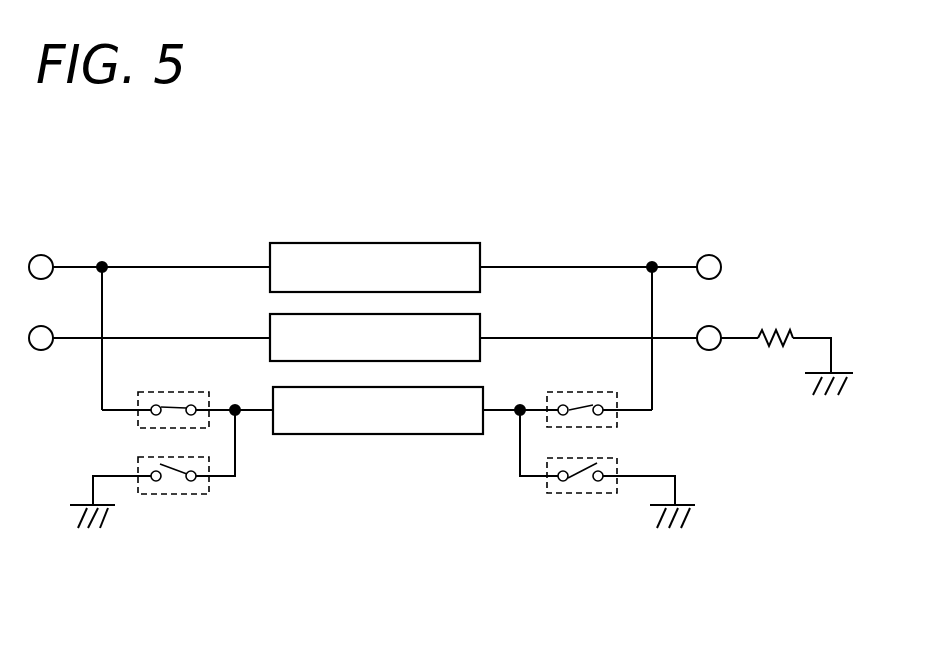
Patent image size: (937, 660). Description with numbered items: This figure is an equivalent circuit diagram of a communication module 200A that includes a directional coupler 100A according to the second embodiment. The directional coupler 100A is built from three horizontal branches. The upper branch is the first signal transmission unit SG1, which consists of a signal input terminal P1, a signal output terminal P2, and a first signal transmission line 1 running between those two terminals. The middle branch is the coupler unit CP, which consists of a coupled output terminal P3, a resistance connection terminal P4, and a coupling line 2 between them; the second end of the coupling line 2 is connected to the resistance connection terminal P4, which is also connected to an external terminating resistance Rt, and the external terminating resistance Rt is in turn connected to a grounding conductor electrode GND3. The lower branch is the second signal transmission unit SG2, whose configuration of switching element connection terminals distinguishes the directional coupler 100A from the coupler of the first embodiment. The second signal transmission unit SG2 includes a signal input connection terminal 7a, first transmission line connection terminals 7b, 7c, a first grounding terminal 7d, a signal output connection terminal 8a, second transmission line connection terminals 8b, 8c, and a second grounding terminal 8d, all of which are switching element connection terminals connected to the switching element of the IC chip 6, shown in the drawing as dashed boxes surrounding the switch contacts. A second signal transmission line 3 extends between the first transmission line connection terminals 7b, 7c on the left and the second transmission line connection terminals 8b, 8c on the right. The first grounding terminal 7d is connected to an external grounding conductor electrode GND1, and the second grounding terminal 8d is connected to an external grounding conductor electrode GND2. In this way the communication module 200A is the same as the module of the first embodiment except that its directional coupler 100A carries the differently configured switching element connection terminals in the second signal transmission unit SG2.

The first signal transmission line 1 is at (308, 253).
The coupling line 2 is at (468, 323).
The second signal transmission line 3 is at (401, 435).
The IC chip 6 is at (140, 431).
The signal input connection terminal 7a is at (153, 406).
The first transmission line connection terminal 7b is at (191, 404).
The first transmission line connection terminal 7c is at (193, 482).
The first grounding terminal 7d is at (156, 482).
The signal output connection terminal 8a is at (604, 402).
The second transmission line connection terminal 8b is at (558, 404).
The second transmission line connection terminal 8c is at (553, 488).
The second grounding terminal 8d is at (598, 483).
The signal input terminal P1 is at (40, 260).
The signal output terminal P2 is at (710, 258).
The coupled output terminal P3 is at (41, 350).
The resistance connection terminal P4 is at (710, 350).
The external terminating resistance Rt is at (773, 328).
The external grounding conductor electrode GND1 is at (78, 503).
The external grounding conductor electrode GND2 is at (692, 505).
The grounding conductor electrode GND3 is at (818, 372).
The first signal transmission unit SG1 is at (410, 208).
The second signal transmission unit SG2 is at (338, 456).
The coupler unit CP is at (237, 317).
The directional coupler 100A is at (553, 208).
The communication module 200A is at (678, 140).